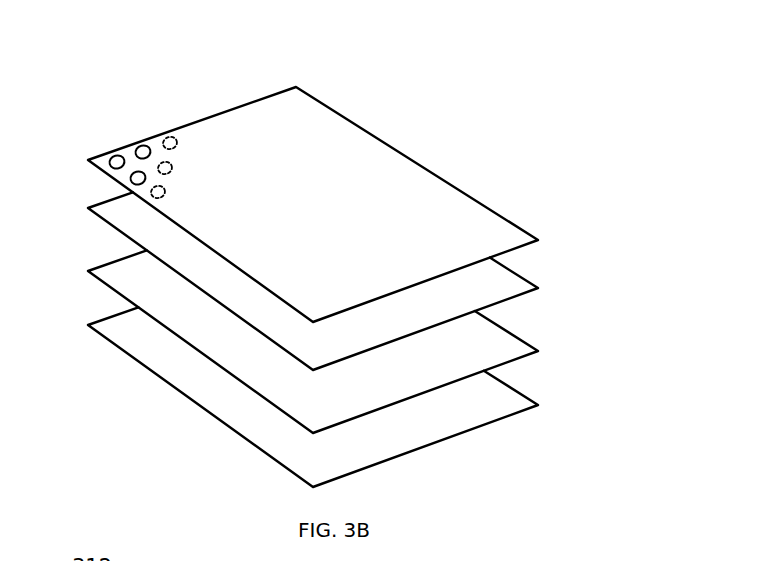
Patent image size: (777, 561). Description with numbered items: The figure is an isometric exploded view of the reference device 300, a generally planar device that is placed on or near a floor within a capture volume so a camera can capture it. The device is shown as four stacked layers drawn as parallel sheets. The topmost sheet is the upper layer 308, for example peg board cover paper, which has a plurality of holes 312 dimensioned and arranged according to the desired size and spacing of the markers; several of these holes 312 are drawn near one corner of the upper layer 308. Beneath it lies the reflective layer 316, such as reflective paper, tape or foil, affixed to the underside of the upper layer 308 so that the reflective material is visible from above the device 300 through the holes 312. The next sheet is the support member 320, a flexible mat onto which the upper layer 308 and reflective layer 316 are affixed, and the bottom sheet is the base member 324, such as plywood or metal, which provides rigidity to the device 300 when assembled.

The reference device 300 is at (363, 280).
The upper layer 308 is at (538, 240).
The holes 312 is at (115, 151).
The reflective layer 316 is at (538, 288).
The support member 320 is at (538, 351).
The base member 324 is at (538, 405).